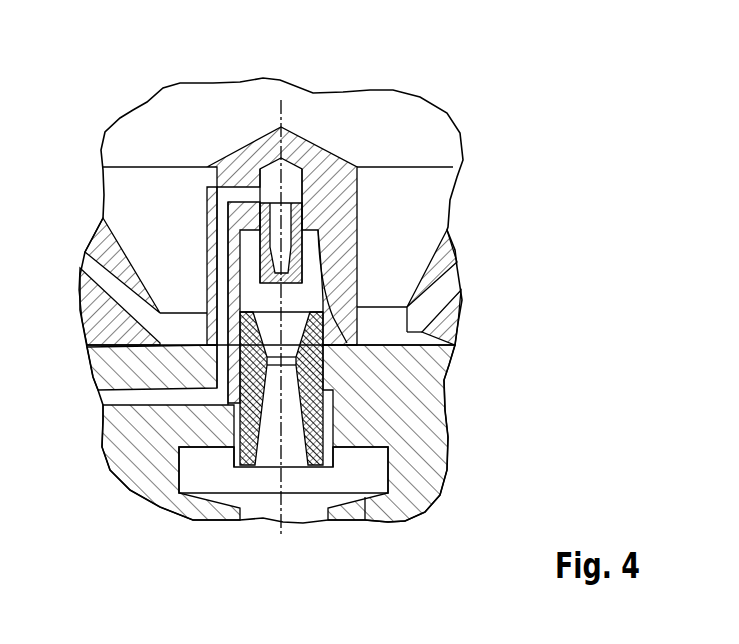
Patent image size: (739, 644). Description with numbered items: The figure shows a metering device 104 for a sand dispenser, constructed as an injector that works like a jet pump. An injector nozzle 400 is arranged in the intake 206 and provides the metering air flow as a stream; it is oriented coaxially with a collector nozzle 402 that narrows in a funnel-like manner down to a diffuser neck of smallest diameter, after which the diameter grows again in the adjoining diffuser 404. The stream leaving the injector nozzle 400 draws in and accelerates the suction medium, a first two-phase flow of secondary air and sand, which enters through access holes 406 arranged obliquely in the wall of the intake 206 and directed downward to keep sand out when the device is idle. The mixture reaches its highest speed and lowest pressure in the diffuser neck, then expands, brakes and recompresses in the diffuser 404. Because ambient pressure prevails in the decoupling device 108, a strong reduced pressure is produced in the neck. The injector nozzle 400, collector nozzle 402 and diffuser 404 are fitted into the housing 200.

The metering device 104 is at (138, 112).
The intake 206 is at (322, 160).
The injector nozzle 400 is at (297, 215).
The access holes 406 is at (333, 260).
The collector nozzle 402 is at (293, 325).
The diffuser 404 is at (293, 390).
The housing 200 is at (425, 427).
The decoupling device 108 is at (373, 467).